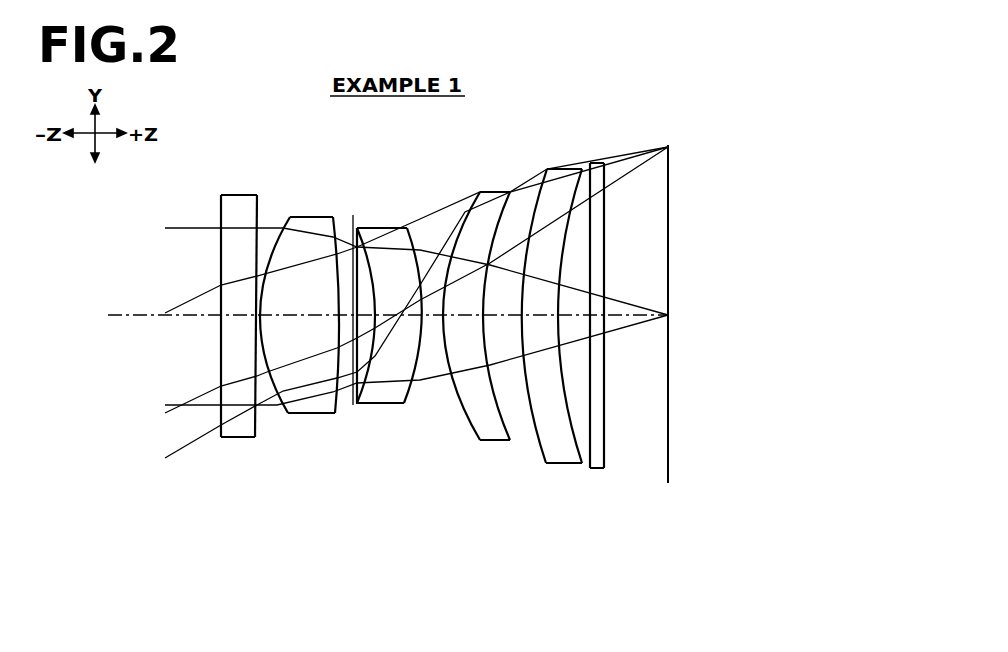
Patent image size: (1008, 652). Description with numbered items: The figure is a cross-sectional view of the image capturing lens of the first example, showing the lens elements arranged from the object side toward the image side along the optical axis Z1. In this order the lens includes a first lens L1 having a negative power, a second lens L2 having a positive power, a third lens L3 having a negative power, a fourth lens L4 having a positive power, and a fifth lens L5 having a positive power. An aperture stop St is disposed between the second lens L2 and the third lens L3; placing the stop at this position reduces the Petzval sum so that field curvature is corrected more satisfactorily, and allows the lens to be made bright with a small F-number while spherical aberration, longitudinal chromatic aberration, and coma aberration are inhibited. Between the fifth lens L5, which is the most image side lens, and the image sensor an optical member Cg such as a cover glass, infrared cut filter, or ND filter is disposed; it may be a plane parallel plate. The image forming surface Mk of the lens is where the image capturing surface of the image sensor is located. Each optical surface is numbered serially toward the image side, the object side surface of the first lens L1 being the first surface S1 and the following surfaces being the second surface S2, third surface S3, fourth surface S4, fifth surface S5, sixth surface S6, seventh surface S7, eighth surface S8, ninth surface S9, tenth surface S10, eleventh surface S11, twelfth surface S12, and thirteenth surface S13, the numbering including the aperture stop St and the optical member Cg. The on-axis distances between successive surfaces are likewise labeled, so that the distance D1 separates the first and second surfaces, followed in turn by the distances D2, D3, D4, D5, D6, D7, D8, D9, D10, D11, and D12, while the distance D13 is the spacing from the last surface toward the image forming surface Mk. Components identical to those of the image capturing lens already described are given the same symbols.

The first lens L1 is at (217, 339).
The second lens L2 is at (301, 350).
The third lens L3 is at (389, 348).
The fourth lens L4 is at (471, 338).
The fifth lens L5 is at (547, 348).
The aperture stop St is at (354, 319).
The optical member Cg is at (602, 356).
The image forming surface Mk is at (667, 472).
The optical axis Z1 is at (118, 313).
The first surface S1 is at (220, 418).
The second surface S2 is at (255, 420).
The third surface S3 is at (282, 398).
The fourth surface S4 is at (334, 405).
The fifth surface S5 is at (353, 405).
The sixth surface S6 is at (363, 400).
The seventh surface S7 is at (406, 403).
The eighth surface S8 is at (465, 400).
The ninth surface S9 is at (500, 414).
The tenth surface S10 is at (541, 436).
The eleventh surface S11 is at (578, 448).
The twelfth surface S12 is at (590, 462).
The thirteenth surface S13 is at (598, 470).
The surface distance D1 is at (243, 313).
The surface distance D2 is at (260, 313).
The surface distance D3 is at (288, 313).
The surface distance D4 is at (345, 311).
The surface distance D5 is at (366, 313).
The surface distance D6 is at (392, 313).
The surface distance D7 is at (434, 313).
The surface distance D8 is at (468, 313).
The surface distance D9 is at (500, 313).
The surface distance D10 is at (538, 314).
The surface distance D11 is at (573, 314).
The surface distance D12 is at (598, 314).
The surface distance D13 is at (661, 314).